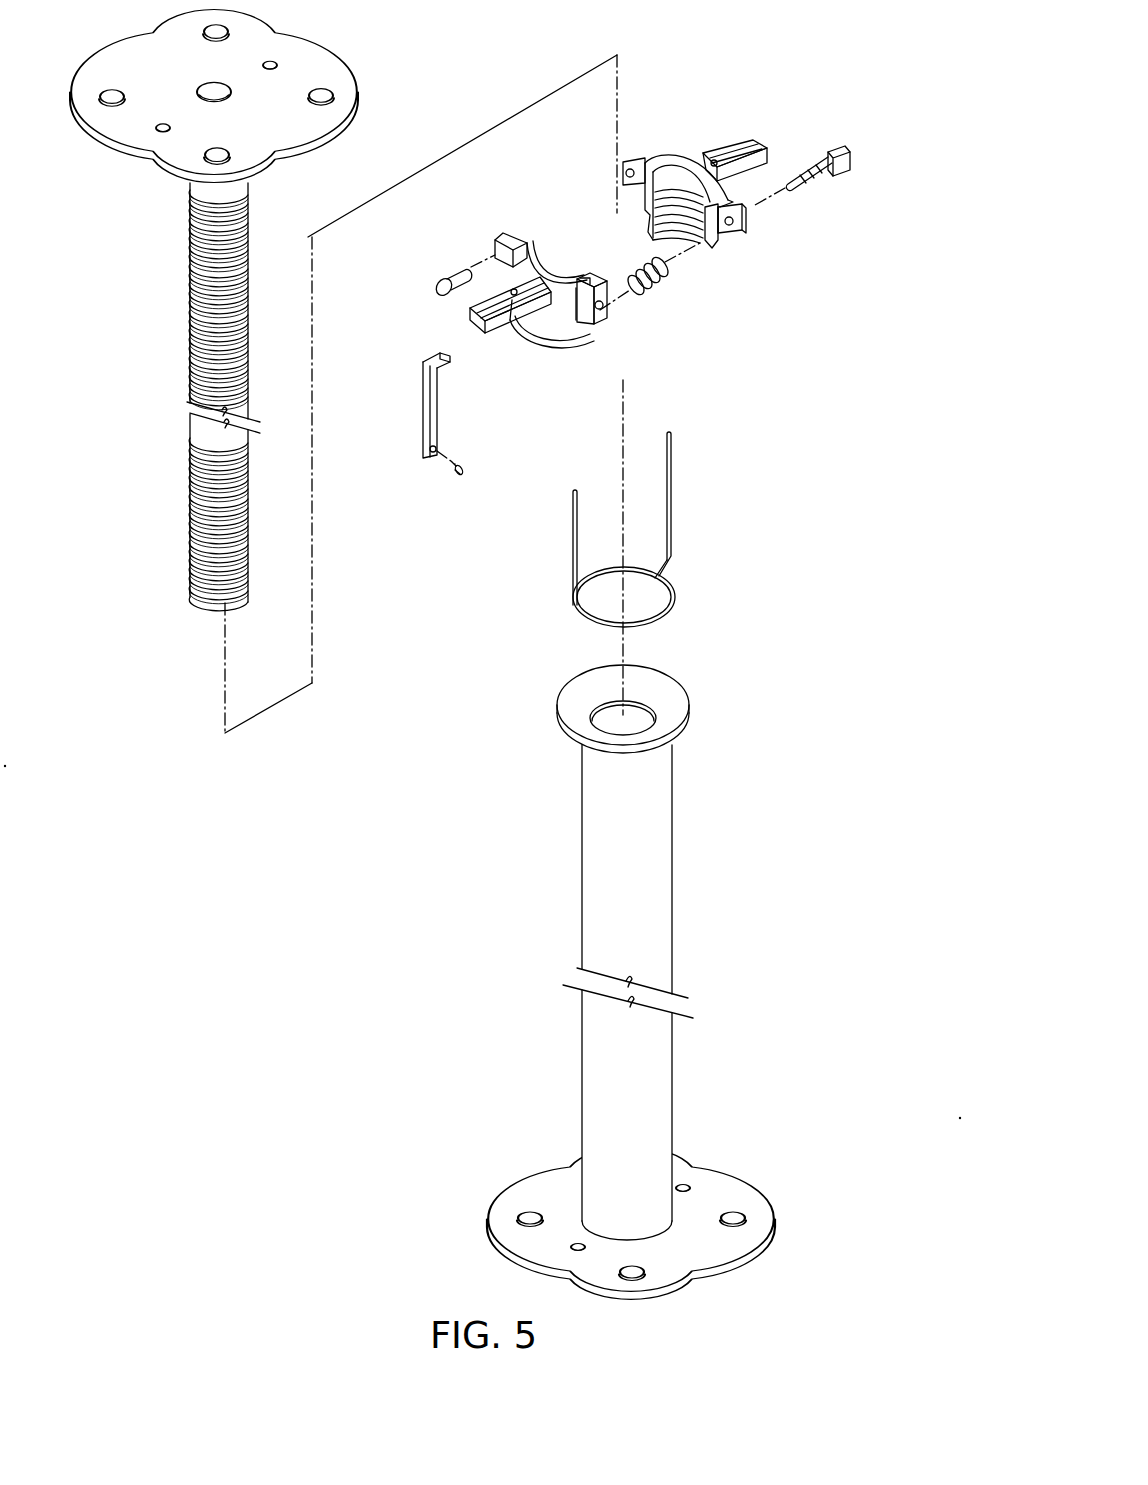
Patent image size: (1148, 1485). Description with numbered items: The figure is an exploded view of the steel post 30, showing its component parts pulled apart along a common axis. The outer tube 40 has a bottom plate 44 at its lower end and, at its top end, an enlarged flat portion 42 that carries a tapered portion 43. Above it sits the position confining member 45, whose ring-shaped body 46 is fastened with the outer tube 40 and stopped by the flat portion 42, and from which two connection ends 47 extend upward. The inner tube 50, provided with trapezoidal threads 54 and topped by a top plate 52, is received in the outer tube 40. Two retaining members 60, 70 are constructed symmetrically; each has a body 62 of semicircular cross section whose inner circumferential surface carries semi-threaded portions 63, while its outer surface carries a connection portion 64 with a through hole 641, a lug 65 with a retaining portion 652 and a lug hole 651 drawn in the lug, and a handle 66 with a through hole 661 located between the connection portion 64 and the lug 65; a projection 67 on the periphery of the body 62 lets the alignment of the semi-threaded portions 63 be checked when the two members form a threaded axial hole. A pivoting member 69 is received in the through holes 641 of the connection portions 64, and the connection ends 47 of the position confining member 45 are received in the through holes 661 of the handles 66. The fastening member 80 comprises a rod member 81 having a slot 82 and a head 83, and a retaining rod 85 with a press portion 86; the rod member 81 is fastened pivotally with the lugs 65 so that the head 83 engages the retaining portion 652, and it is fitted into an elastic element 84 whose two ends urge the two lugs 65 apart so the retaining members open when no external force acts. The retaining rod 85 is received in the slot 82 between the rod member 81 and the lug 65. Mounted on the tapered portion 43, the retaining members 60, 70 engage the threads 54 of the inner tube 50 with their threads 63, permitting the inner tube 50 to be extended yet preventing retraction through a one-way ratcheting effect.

The steel post 30 is at (300, 912).
The outer tube 40 is at (634, 982).
The flat portion 42 is at (690, 700).
The tapered portion 43 is at (672, 717).
The bottom plate 44 is at (737, 1192).
The position confining member 45 is at (668, 529).
The ring-shaped body 46 is at (673, 612).
The connection ends 47 is at (672, 522).
The inner tube 50 is at (178, 250).
The top plate 52 is at (327, 122).
The trapezoidal threads 54 is at (205, 325).
The retaining member 60 is at (763, 127).
The body 62 is at (552, 330).
The semi-threaded portions 63 is at (680, 207).
The connection portion 64 is at (515, 235).
The through hole 641 is at (632, 165).
The lug 65 is at (607, 313).
The tab hole 651 is at (733, 240).
The retaining portion 652 is at (727, 205).
The handle 66 is at (468, 316).
The through hole 661 is at (715, 160).
The projection 67 is at (573, 330).
The pivoting member 69 is at (450, 267).
The retaining member 70 is at (488, 233).
The fastening member 80 is at (838, 131).
The rod member 81 is at (833, 182).
The slot 82 is at (810, 165).
The head 83 is at (853, 163).
The elastic element 84 is at (660, 283).
The retaining rod 85 is at (420, 410).
The press portion 86 is at (430, 355).